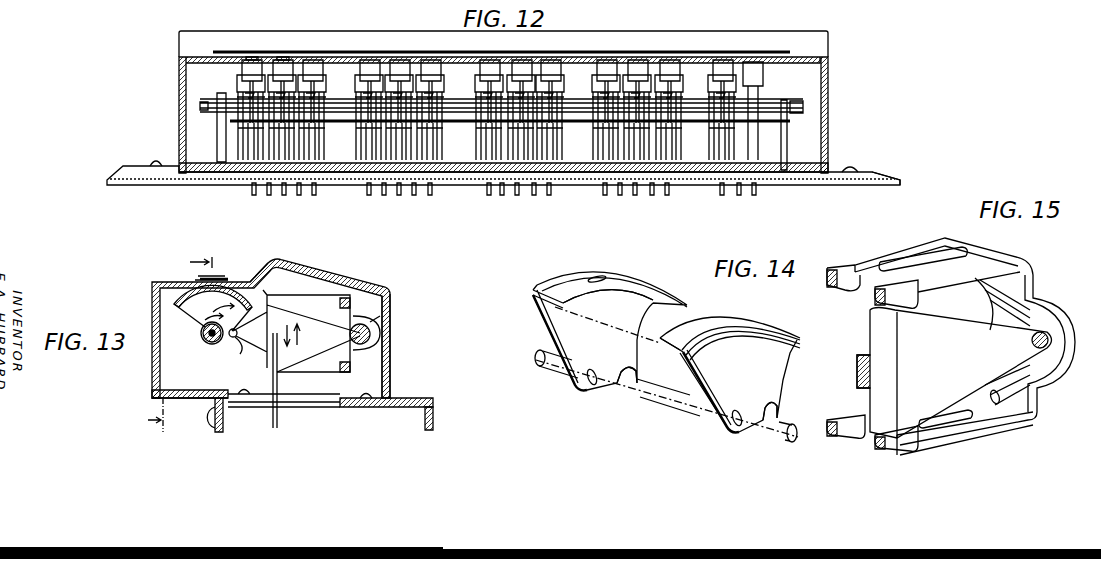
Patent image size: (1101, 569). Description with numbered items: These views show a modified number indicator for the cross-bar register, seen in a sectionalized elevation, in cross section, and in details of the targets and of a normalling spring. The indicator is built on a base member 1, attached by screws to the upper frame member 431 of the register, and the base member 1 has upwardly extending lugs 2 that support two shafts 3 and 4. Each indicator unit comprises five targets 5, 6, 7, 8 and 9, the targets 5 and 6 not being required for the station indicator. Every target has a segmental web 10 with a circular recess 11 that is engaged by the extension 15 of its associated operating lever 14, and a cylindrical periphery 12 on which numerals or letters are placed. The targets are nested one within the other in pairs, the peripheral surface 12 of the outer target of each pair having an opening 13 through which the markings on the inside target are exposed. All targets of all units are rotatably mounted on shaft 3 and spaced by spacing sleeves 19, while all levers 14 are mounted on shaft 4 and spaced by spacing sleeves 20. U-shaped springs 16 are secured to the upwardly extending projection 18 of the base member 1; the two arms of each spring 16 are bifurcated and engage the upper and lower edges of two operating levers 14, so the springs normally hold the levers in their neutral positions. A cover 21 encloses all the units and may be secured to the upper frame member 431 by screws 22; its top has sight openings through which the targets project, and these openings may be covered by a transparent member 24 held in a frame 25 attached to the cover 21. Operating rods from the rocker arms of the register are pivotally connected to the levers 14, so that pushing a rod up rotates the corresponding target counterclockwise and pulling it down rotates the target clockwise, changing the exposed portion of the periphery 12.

In FIG. 12, the base member 1 is at (200, 174).
In FIG. 13, the base member 1 is at (178, 398).
In FIG. 12, the upwardly extending lugs 2 is at (212, 125).
In FIG. 13, the upwardly extending lugs 2 is at (200, 368).
In FIG. 12, the shaft 3 is at (200, 106).
In FIG. 13, the shaft 3 is at (198, 332).
In FIG. 14, the shaft 3 is at (648, 393).
In FIG. 13, the shaft 4 is at (371, 332).
In FIG. 15, the shaft 4 is at (1030, 341).
In FIG. 12, the target 5 is at (255, 58).
In FIG. 14, the target 5 is at (572, 273).
In FIG. 12, the target 6 is at (250, 87).
In FIG. 14, the target 6 is at (792, 333).
In FIG. 12, the target 7 is at (298, 58).
In FIG. 13, the target 7 is at (257, 280).
In FIG. 12, the target 8 is at (293, 92).
In FIG. 13, the target 8 is at (190, 300).
In FIG. 12, the target 9 is at (318, 58).
In FIG. 14, the segmental web 10 is at (545, 319).
In FIG. 14, the circular recess 11 is at (635, 369).
In FIG. 13, the cylindrical periphery 12 is at (171, 343).
In FIG. 14, the cylindrical periphery 12 is at (540, 288).
In FIG. 12, the opening 13 is at (257, 58).
In FIG. 14, the opening 13 is at (597, 273).
In FIG. 13, the operating lever 14 is at (288, 312).
In FIG. 15, the operating lever 14 is at (885, 390).
In FIG. 13, the extension 15 is at (238, 346).
In FIG. 13, the U-shaped spring 16 is at (320, 375).
In FIG. 15, the U-shaped spring 16 is at (1047, 300).
In FIG. 13, the upwardly extending projection 18 is at (332, 388).
In FIG. 12, the spacing sleeves 19 is at (278, 124).
In FIG. 13, the spacing sleeves 19 is at (203, 336).
In FIG. 13, the spacing sleeves 20 is at (373, 325).
In FIG. 12, the cover 21 is at (828, 108).
In FIG. 13, the cover 21 is at (391, 362).
In FIG. 12, the screws 22 is at (152, 160).
In FIG. 13, the transparent member 24 is at (217, 277).
In FIG. 12, the frame 25 is at (797, 58).
In FIG. 13, the frame 25 is at (225, 277).
In FIG. 12, the upper frame member 431 is at (882, 172).
In FIG. 13, the upper frame member 431 is at (413, 398).